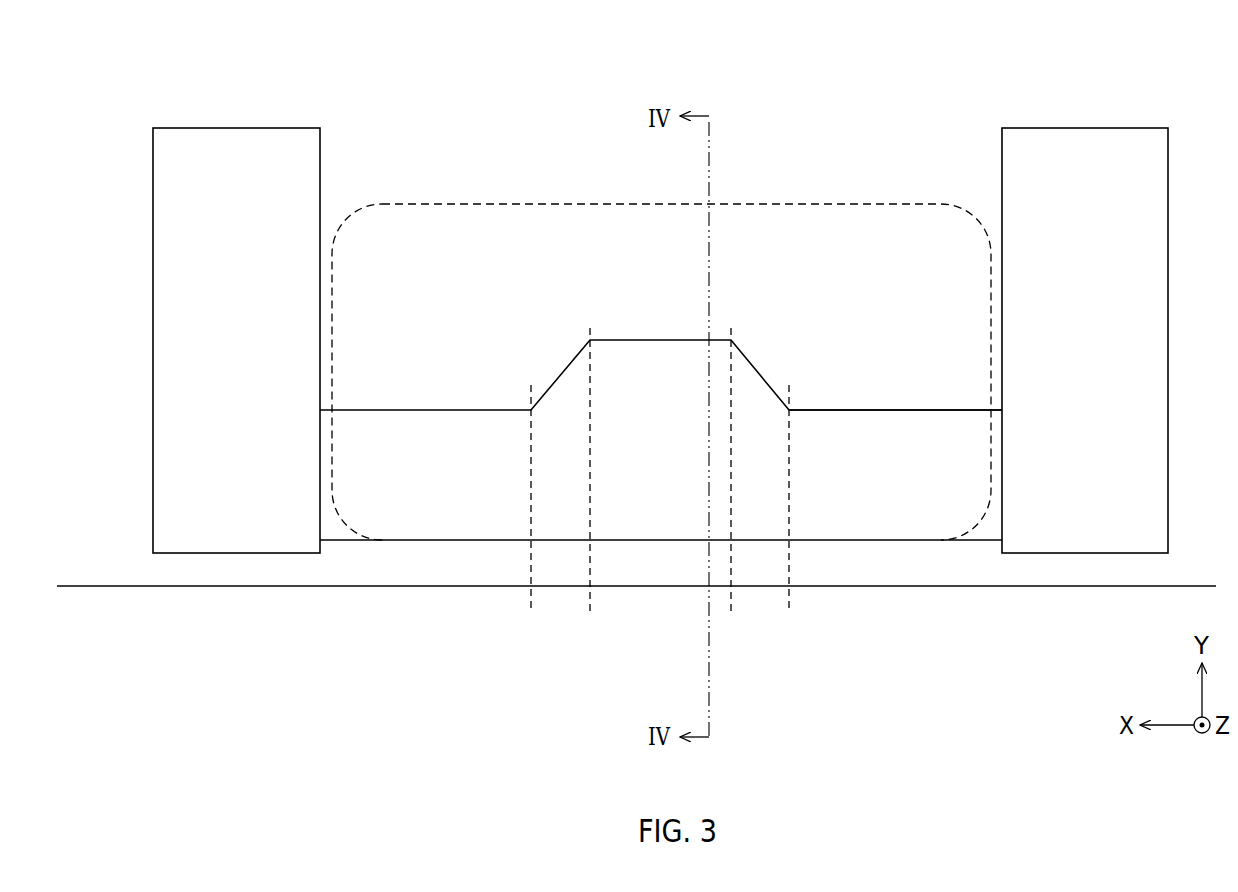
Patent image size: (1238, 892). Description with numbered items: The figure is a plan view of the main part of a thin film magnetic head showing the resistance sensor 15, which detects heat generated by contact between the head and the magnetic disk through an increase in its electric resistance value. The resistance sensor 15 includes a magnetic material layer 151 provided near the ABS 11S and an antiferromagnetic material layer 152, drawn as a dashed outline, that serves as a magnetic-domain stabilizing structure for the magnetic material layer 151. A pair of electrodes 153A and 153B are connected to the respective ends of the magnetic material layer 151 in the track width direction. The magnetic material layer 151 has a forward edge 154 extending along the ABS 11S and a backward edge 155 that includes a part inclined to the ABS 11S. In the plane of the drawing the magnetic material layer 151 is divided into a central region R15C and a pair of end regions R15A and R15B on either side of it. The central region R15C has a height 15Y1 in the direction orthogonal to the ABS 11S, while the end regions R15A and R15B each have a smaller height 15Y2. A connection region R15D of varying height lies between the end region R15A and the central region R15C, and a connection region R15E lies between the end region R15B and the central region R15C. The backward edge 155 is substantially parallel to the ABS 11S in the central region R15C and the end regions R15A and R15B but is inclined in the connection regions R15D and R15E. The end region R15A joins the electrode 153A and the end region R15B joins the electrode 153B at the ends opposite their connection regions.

The resistance sensor 15 is at (948, 80).
The magnetic material layer 151 is at (494, 458).
The antiferromagnetic material layer 152 is at (433, 202).
The electrode 153A is at (236, 137).
The electrode 153B is at (1084, 138).
The forward edge 154 is at (877, 538).
The backward edge 155 is at (877, 412).
The ABS 11S is at (262, 587).
The height of central region 15Y1 is at (635, 341).
The height of end regions 15Y2 is at (413, 411).
The end region R15A is at (530, 617).
The end region R15B is at (1000, 617).
The central region R15C is at (730, 617).
The connection region R15D is at (588, 617).
The connection region R15E is at (788, 617).